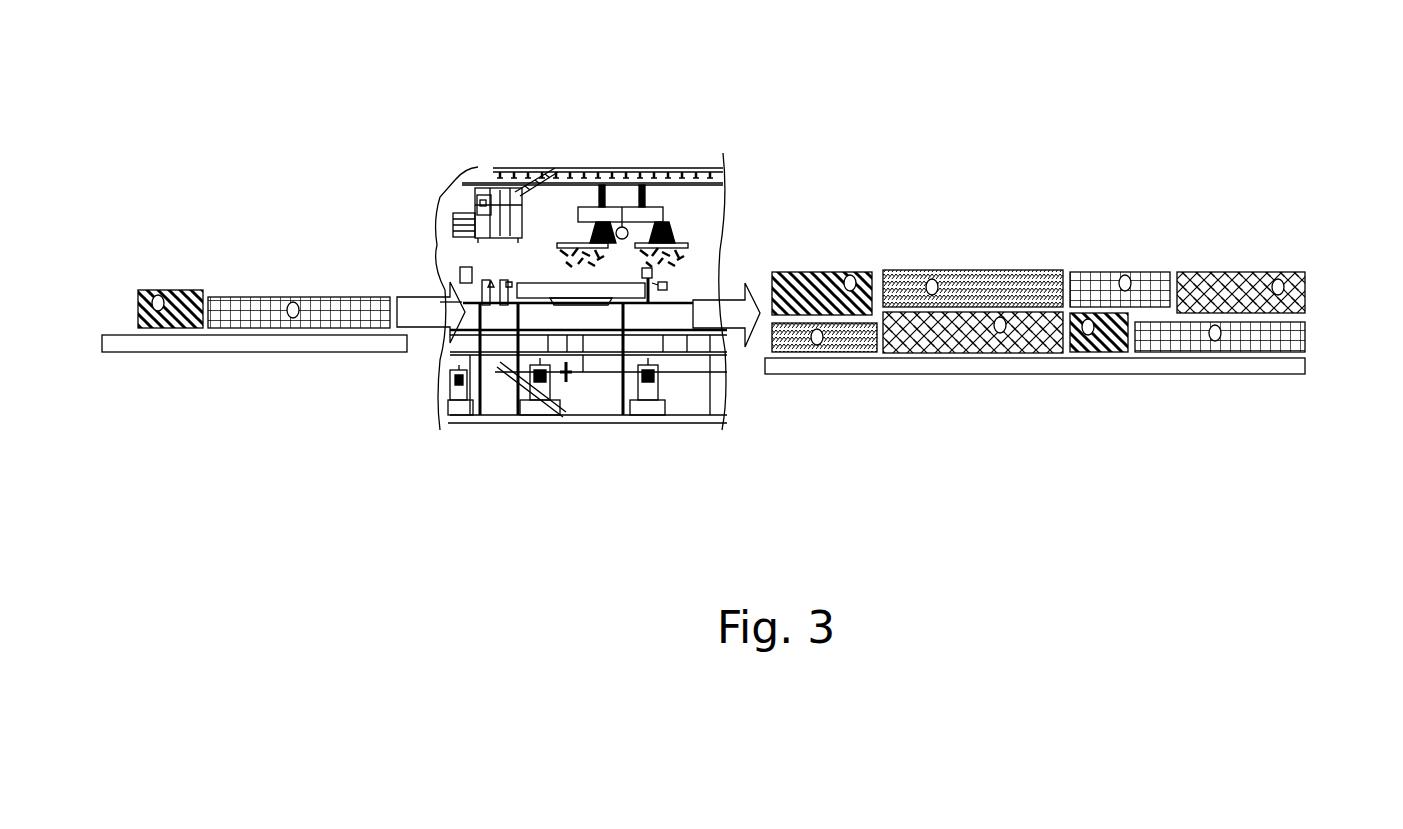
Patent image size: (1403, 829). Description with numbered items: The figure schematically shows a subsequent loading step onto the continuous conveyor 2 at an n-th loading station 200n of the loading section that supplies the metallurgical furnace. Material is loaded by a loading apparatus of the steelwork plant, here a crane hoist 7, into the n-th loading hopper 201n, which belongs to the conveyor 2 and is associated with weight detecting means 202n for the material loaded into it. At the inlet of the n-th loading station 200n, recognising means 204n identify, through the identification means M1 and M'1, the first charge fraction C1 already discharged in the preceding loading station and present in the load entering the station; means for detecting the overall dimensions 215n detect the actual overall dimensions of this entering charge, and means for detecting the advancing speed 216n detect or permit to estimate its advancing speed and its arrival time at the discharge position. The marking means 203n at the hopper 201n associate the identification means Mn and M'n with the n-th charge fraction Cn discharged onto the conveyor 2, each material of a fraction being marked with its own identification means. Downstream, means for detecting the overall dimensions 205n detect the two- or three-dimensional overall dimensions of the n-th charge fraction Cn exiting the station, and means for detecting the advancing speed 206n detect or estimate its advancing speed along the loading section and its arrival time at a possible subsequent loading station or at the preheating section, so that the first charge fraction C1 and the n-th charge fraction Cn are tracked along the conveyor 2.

The continuous conveyor 2 is at (168, 353).
The crane hoist 7 is at (673, 212).
The first charge fraction C1 is at (132, 287).
The n-th charge fraction Cn is at (1307, 287).
The identification means of the first charge fraction M1 is at (1248, 433).
The identification means of a further material of the first charge fraction M'1 is at (643, 346).
The identification means of the n-th charge fraction Mn is at (1280, 273).
The identification means of a further material of the n-th charge fraction M'n is at (1125, 247).
The n-th loading station 200n is at (573, 156).
The n-th loading hopper 201n is at (545, 283).
The weight detecting means 202n is at (582, 297).
The marking means 203n is at (665, 262).
The recognising means 204n is at (458, 272).
The means for detecting the overall dimensions 205n is at (652, 300).
The means for detecting the advancing speed 206n is at (645, 312).
The means for detecting the overall dimensions at the inlet 215n is at (512, 310).
The means for detecting the advancing speed at the inlet 216n is at (452, 396).